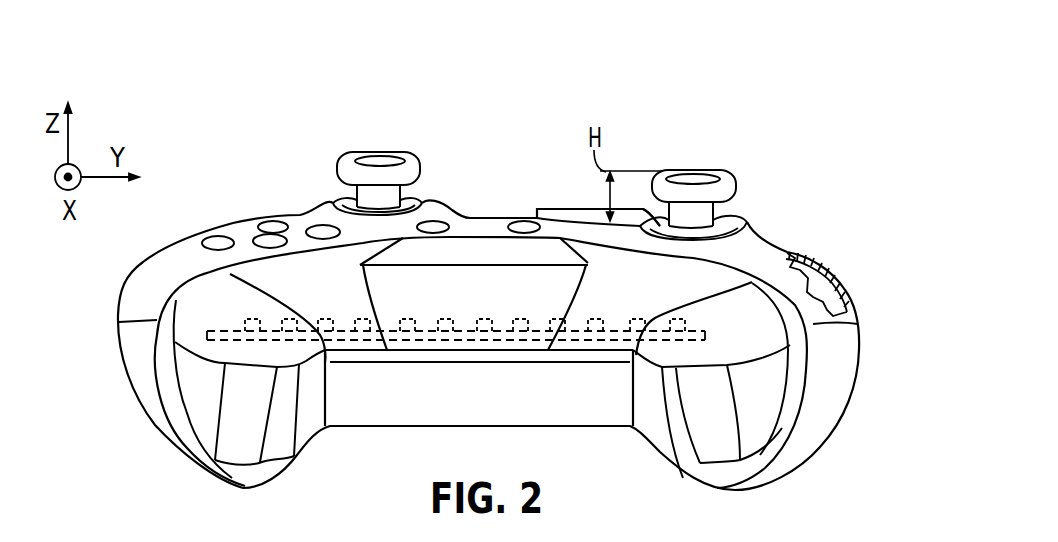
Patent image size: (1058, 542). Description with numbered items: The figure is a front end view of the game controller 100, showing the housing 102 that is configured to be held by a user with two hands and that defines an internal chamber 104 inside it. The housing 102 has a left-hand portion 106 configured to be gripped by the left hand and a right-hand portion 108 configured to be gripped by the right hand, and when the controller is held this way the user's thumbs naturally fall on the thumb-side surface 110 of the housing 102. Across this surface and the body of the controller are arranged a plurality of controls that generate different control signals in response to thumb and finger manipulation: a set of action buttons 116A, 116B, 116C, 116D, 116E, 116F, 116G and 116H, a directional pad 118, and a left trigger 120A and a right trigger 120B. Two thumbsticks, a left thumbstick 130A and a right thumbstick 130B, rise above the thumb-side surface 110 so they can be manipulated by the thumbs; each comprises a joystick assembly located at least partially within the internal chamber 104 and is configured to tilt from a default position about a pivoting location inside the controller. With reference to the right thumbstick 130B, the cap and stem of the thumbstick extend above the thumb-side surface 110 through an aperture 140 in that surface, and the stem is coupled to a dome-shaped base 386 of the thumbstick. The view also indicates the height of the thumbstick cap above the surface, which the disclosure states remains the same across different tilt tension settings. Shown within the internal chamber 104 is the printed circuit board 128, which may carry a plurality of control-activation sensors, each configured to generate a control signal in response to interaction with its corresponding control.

The game controller 100 is at (604, 82).
The housing 102 is at (816, 244).
The internal chamber 104 is at (823, 287).
The left-hand portion 106 is at (857, 323).
The right-hand portion 108 is at (122, 313).
The thumb-side surface 110 is at (492, 223).
The action button 116A is at (752, 342).
The action button 116B is at (197, 330).
The action button 116C is at (325, 240).
The action button 116D is at (270, 220).
The action button 116E is at (213, 240).
The action button 116F is at (253, 235).
The action button 116G is at (522, 233).
The action button 116H is at (432, 233).
The directional pad 118 is at (564, 209).
The left trigger 120A is at (722, 490).
The right trigger 120B is at (243, 486).
The printed circuit board 128 is at (688, 328).
The left thumbstick 130A is at (722, 160).
The right thumbstick 130B is at (408, 142).
The aperture 140 is at (334, 201).
The dome-shaped base 386 is at (372, 213).